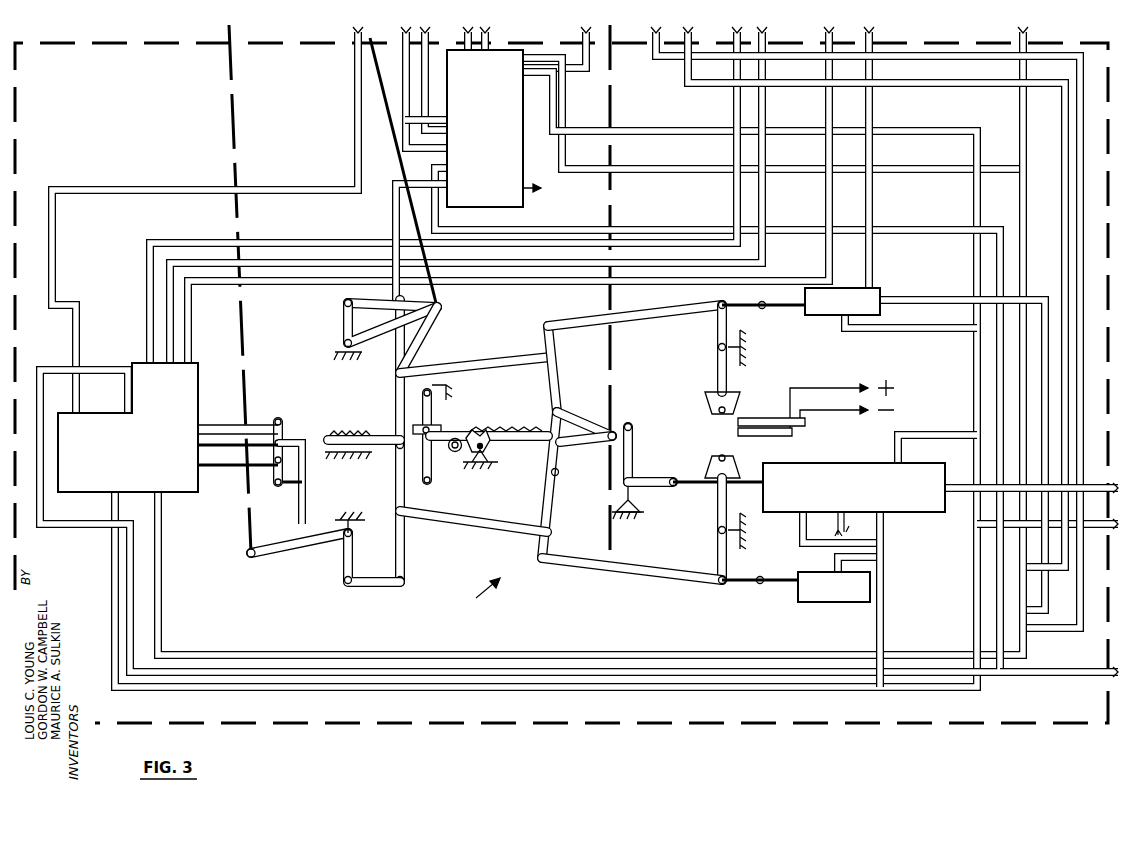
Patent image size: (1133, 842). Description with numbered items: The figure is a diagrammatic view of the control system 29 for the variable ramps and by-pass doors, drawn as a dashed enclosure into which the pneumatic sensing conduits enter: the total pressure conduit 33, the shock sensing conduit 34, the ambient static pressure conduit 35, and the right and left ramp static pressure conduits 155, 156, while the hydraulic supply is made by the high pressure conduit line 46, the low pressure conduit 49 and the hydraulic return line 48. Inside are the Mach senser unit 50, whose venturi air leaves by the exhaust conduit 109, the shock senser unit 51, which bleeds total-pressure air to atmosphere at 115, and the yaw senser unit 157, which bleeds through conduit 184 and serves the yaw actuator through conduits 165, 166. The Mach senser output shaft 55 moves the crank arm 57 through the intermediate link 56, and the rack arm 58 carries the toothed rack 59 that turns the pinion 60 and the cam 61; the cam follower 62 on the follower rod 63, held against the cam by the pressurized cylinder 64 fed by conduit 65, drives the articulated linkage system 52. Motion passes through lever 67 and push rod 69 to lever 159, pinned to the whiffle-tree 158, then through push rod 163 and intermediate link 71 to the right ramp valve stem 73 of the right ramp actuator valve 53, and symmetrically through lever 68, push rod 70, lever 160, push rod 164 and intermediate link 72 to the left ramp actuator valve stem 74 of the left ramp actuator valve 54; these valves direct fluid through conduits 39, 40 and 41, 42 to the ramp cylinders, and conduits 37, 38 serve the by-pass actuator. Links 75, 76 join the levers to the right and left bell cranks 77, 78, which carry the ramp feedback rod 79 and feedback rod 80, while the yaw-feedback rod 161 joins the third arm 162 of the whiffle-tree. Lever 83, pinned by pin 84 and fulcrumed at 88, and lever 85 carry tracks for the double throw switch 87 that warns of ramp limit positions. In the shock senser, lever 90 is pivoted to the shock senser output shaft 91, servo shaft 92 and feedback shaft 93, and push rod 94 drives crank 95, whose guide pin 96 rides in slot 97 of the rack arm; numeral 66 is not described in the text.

The control system 29 is at (532, 730).
The total pressure conduit 33 is at (556, 138).
The shock sensing conduit 34 is at (354, 90).
The ambient static pressure conduit 35 is at (1108, 490).
The by-pass actuator hydraulic conduit 37 is at (734, 106).
The by-pass actuator hydraulic conduit 38 is at (765, 112).
The right ramp actuating conduit 39 is at (831, 126).
The right ramp actuating conduit 40 is at (872, 106).
The left ramp actuating conduit 41 is at (658, 60).
The left ramp actuating conduit 42 is at (692, 86).
The high pressure conduit line 46 is at (402, 228).
The hydraulic return line 48 is at (668, 230).
The low pressure conduit 49 is at (675, 130).
The Mach senser unit 50 is at (822, 470).
The shock senser unit 51 is at (180, 380).
The articulated linkage system 52 is at (476, 594).
The right ramp actuator valve 53 is at (833, 304).
The left ramp actuator valve 54 is at (815, 592).
The Mach senser output shaft 55 is at (740, 486).
The intermediate link 56 is at (652, 486).
The crank arm 57 is at (634, 433).
The rack arm 58 is at (600, 428).
The toothed rack 59 is at (508, 440).
The pinion 60 is at (490, 448).
The cam 61 is at (478, 434).
The cam follower 62 is at (454, 452).
The follower rod 63 is at (396, 436).
The pressurized cylinder 64 is at (345, 436).
The conduit 65 is at (300, 500).
The pivot 66 is at (402, 452).
The lever 67 is at (394, 390).
The lever 68 is at (352, 528).
The push rod 69 is at (478, 364).
The push rod 70 is at (450, 516).
The intermediate link 71 is at (758, 300).
The intermediate link 72 is at (722, 590).
The right ramp valve stem 73 is at (772, 310).
The left ramp actuator valve stem 74 is at (756, 586).
The link 75 is at (388, 303).
The link 76 is at (384, 588).
The right bell crank 77 is at (344, 336).
The left bell crank 78 is at (342, 565).
The ramp feedback rod 79 is at (408, 188).
The feedback rod 80 is at (243, 327).
The lever 83 is at (715, 345).
The pin 84 is at (705, 298).
The lever 85 is at (716, 554).
The double throw switch 87 is at (806, 432).
The fulcrum 88 is at (716, 366).
The lever 90 is at (283, 436).
The shock senser output shaft 91 is at (212, 462).
The servo shaft 92 is at (262, 428).
The feedback shaft 93 is at (208, 422).
The push rod 94 is at (350, 483).
The crank 95 is at (434, 475).
The guide pin 96 is at (440, 425).
The slot 97 is at (446, 430).
The exhaust conduit 109 is at (846, 530).
The bleed to atmosphere 115 is at (543, 190).
The right ramp static pressure conduit 155 is at (576, 74).
The left ramp static pressure conduit 156 is at (490, 36).
The yaw senser unit 157 is at (455, 78).
The whiffle-tree 158 is at (562, 455).
The lever 159 is at (556, 370).
The lever 160 is at (545, 500).
The yaw-feedback rod 161 is at (605, 297).
The third arm 162 is at (590, 442).
The push rod 163 is at (628, 318).
The push rod 164 is at (612, 568).
The yaw actuator hydraulic conduit 165 is at (382, 60).
The yaw actuator hydraulic conduit 166 is at (405, 124).
The conduit 184 is at (470, 40).